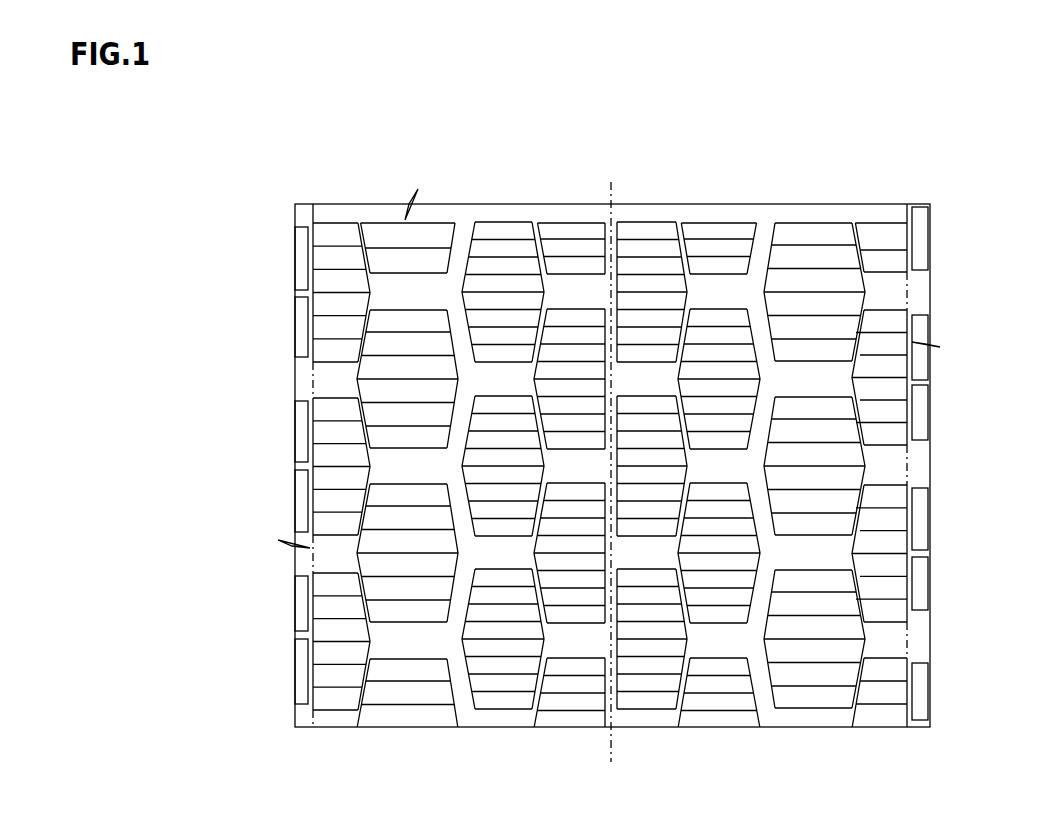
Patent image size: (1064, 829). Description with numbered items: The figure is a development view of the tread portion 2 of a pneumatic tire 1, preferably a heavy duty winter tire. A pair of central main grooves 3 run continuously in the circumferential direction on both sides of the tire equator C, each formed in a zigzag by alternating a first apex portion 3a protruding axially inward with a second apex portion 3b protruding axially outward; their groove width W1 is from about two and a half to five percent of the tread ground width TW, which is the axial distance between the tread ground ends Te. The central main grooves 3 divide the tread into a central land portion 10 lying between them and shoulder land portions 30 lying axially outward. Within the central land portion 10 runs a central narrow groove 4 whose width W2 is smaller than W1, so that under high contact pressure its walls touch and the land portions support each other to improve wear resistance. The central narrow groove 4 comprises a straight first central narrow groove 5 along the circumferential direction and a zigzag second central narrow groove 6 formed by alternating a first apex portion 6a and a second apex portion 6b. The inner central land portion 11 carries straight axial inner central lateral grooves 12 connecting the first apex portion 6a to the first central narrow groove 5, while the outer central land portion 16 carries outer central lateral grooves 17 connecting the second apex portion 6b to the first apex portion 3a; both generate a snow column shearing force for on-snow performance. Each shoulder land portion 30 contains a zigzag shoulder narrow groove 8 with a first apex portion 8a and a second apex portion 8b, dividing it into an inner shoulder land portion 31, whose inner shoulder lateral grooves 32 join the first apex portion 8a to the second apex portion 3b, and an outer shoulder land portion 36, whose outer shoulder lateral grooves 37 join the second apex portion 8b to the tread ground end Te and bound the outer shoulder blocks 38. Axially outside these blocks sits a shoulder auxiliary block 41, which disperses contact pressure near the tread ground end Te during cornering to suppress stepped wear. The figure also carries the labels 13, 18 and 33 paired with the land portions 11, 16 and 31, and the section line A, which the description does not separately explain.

The pneumatic tire 1 is at (612, 415).
The tread portion 2 is at (584, 192).
The central main groove 3 is at (463, 235).
The first apex portion 3a is at (470, 381).
The second apex portion 3b is at (451, 465).
The central narrow groove 4 is at (619, 435).
The first central narrow groove 5 is at (613, 235).
The second central narrow groove 6 is at (535, 233).
The first apex portion 6a is at (671, 555).
The second apex portion 6b is at (693, 651).
The shoulder narrow groove 8 is at (363, 241).
The first apex portion 8a is at (846, 554).
The second apex portion 8b is at (868, 648).
The central land portion 10 is at (397, 122).
The inner central land portion 11 is at (556, 411).
The inner central lateral grooves 12 is at (582, 642).
The sipes of center land portion 13 is at (575, 250).
The outer central land portion 16 is at (473, 410).
The outer central lateral grooves 17 is at (505, 553).
The sipes of intermediate land portion 18 is at (503, 262).
The shoulder land portion 30 is at (903, 122).
The inner shoulder land portion 31 is at (800, 409).
The inner shoulder lateral grooves 32 is at (408, 643).
The sipes 33 is at (808, 282).
The outer shoulder land portion 36 is at (874, 419).
The outer shoulder lateral grooves 37 is at (340, 555).
The outer shoulder blocks 38 is at (890, 336).
The shoulder auxiliary block 41 is at (303, 323).
The tread ground width TW is at (907, 204).
The tread ground end Te is at (313, 382).
The tire equator C is at (613, 459).
The section line A is at (293, 565).
The groove width of central main groove W1 is at (500, 681).
The groove width of central narrow groove W2 is at (508, 677).